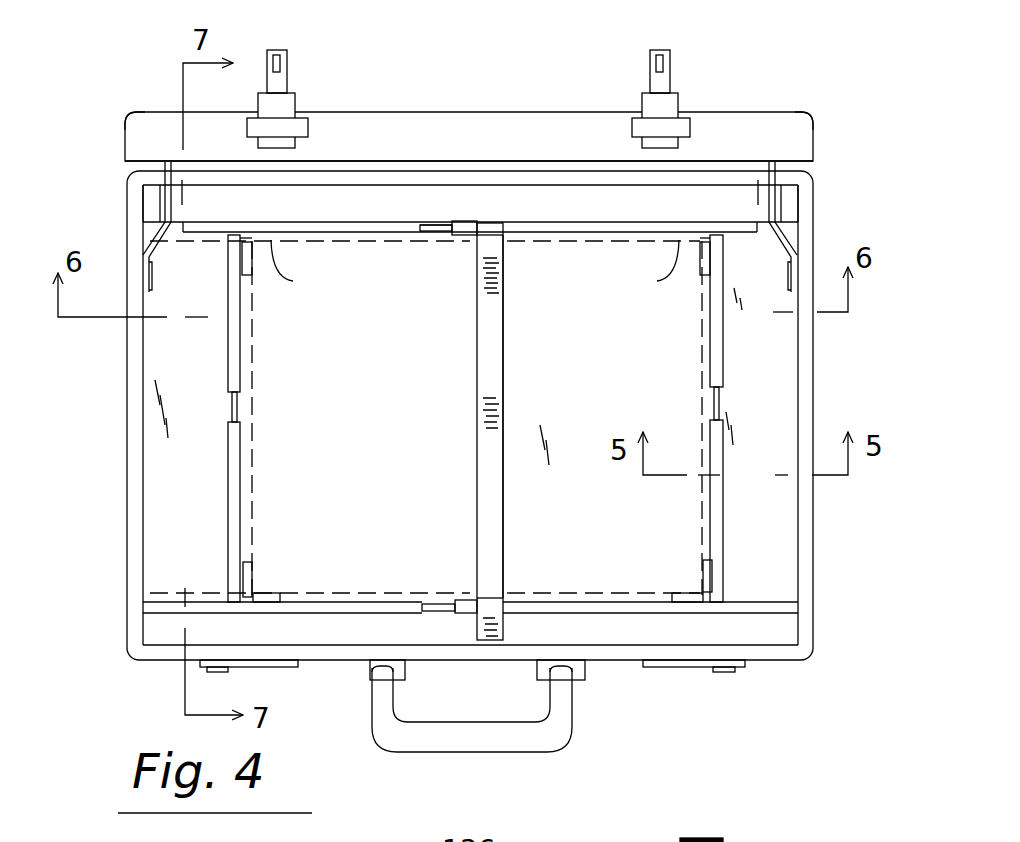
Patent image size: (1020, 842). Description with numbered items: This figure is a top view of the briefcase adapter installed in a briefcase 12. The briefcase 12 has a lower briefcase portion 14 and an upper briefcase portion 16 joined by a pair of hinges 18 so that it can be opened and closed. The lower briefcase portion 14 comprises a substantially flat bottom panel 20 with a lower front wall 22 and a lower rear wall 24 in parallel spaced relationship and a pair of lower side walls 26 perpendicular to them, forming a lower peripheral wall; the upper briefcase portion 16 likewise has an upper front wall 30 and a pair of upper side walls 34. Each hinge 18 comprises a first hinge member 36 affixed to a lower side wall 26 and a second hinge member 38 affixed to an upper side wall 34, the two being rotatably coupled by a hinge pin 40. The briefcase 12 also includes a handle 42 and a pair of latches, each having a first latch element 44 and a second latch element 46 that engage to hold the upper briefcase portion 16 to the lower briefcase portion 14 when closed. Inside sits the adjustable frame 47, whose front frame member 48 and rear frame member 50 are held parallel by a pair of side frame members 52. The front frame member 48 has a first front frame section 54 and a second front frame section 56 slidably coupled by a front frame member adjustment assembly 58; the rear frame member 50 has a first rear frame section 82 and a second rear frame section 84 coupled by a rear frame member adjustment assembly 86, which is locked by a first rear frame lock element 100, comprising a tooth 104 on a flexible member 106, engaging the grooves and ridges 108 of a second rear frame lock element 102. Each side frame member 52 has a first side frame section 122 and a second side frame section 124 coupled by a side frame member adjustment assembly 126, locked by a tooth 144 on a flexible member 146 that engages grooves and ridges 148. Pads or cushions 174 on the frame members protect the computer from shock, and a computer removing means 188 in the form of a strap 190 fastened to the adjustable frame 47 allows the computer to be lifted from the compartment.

The briefcase 12 is at (113, 650).
The lower briefcase portion 14 is at (837, 528).
The upper briefcase portion 16 is at (542, 78).
The hinge 18 is at (155, 228).
The bottom panel 20 is at (452, 446).
The lower front wall 22 is at (608, 662).
The lower rear wall 24 is at (635, 183).
The lower side wall 26 is at (128, 447).
The upper front wall 30 is at (745, 127).
The upper side wall 34 is at (126, 121).
The first hinge member 36 is at (155, 252).
The second hinge member 38 is at (170, 177).
The hinge pin 40 is at (184, 203).
The handle 42 is at (563, 727).
The first latch element 44 is at (263, 668).
The second latch element 46 is at (287, 80).
The adjustable frame 47 is at (185, 538).
The front frame member 48 is at (542, 590).
The rear frame member 50 is at (522, 240).
The side frame member 52 is at (263, 367).
The first front frame section 54 is at (420, 610).
The second front frame section 56 is at (620, 613).
The front frame member adjustment assembly 58 is at (435, 578).
The first rear frame section 82 is at (313, 240).
The second rear frame section 84 is at (583, 233).
The rear frame member adjustment assembly 86 is at (438, 245).
The first rear frame lock element 100 is at (424, 222).
The second rear frame lock element 102 is at (427, 190).
The tooth 104 is at (436, 220).
The flexible member 106 is at (423, 221).
The grooves and ridges 108 is at (440, 222).
The first side frame section 122 is at (228, 338).
The second side frame section 124 is at (232, 485).
The side frame member adjustment assembly 126 is at (252, 403).
The tooth 144 is at (727, 393).
The flexible member 146 is at (725, 383).
The grooves and ridges 148 is at (718, 408).
The pads or cushions 174 is at (707, 562).
The computer removing means 188 is at (509, 375).
The strap 190 is at (503, 345).